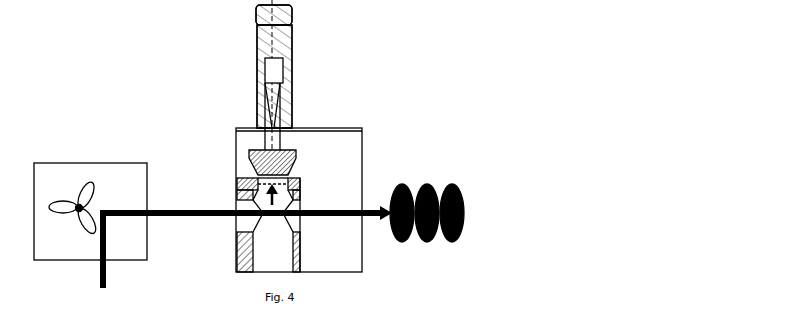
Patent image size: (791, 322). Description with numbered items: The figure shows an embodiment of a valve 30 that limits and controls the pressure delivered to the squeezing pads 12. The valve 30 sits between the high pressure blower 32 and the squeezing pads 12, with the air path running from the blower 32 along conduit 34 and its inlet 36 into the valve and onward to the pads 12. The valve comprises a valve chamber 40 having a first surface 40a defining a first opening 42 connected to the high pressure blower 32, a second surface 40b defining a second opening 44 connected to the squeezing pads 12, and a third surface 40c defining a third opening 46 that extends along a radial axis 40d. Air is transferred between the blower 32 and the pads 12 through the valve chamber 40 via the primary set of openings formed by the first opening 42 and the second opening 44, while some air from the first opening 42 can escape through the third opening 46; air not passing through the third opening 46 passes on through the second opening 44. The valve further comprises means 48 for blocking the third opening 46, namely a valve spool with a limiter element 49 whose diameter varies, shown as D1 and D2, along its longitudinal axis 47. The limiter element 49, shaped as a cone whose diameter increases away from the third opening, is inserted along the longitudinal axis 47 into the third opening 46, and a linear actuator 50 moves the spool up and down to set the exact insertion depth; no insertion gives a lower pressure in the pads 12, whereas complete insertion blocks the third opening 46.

The squeezing pads 12 is at (428, 183).
The valve 30 is at (238, 274).
The high pressure blower 32 is at (130, 163).
The conduit 34 is at (152, 209).
The conduit inlet 36 is at (98, 262).
The valve chamber 40 is at (287, 258).
The first surface 40a is at (243, 203).
The second surface 40b is at (300, 199).
The third surface 40c is at (262, 178).
The radial axis 40d is at (300, 181).
The first opening 42 is at (237, 222).
The second opening 44 is at (299, 221).
The third opening 46 is at (290, 181).
The longitudinal axis 47 is at (262, 78).
The means for blocking the third opening 48 is at (258, 144).
The limiter element 49 is at (294, 161).
The linear actuator 50 is at (260, 47).
The diameter D1 is at (249, 164).
The diameter D2 is at (257, 171).